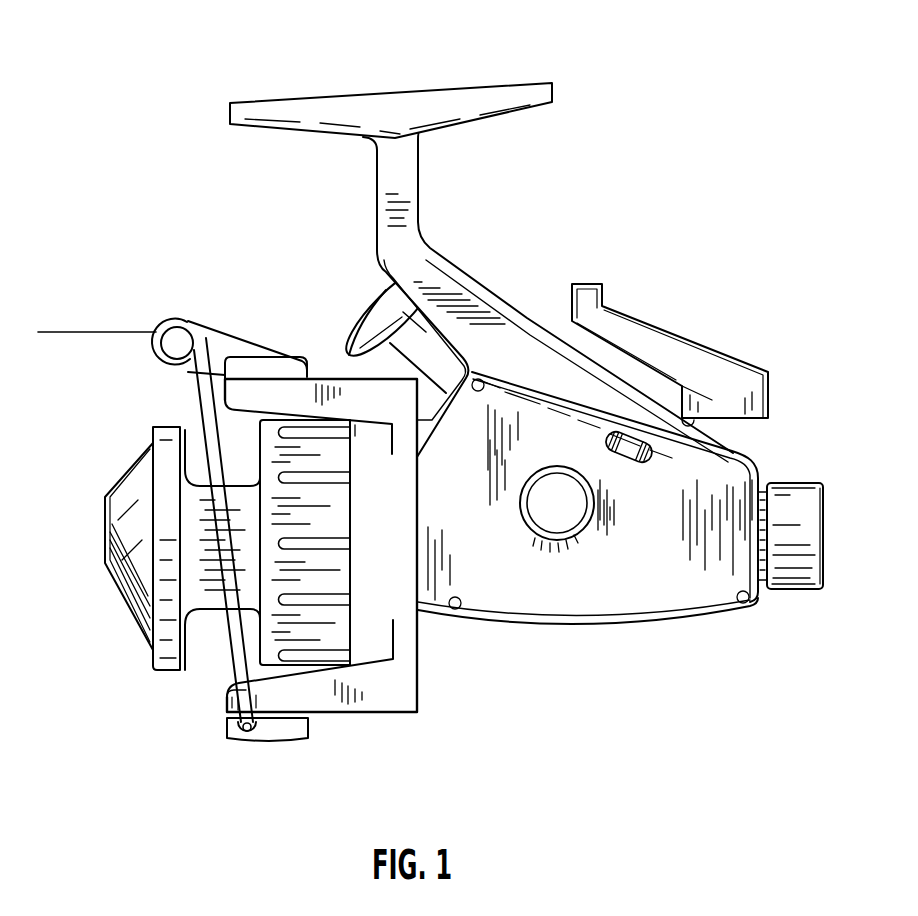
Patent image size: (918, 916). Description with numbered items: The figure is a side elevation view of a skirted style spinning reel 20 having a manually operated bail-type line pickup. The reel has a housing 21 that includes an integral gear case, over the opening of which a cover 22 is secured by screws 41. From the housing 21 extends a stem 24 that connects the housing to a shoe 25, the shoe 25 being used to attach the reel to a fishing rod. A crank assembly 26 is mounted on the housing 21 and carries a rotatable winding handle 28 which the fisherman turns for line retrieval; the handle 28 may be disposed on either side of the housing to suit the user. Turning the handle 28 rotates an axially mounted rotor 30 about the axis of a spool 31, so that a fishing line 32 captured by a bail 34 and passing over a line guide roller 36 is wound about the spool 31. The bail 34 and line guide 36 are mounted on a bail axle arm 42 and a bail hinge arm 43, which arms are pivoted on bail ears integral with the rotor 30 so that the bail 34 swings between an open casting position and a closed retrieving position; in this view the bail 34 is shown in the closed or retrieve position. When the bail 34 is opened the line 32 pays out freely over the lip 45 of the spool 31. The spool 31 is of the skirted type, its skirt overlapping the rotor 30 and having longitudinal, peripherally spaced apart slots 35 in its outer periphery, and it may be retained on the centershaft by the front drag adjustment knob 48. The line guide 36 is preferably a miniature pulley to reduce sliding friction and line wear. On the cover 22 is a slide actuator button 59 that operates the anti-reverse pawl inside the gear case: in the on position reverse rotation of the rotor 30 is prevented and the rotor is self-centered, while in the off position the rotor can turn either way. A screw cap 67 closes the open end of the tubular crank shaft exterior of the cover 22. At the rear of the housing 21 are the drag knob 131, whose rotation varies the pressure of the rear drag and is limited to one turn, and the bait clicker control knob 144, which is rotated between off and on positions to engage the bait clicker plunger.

The spinning reel 20 is at (505, 287).
The housing 21 is at (543, 622).
The cover 22 is at (613, 597).
The stem 24 is at (410, 212).
The shoe 25 is at (402, 100).
The crank assembly 26 is at (372, 291).
The winding handle 28 is at (357, 323).
The rotor 30 is at (388, 698).
The spool 31 is at (178, 668).
The fishing line 32 is at (73, 332).
The bail 34 is at (233, 663).
The slots 35 is at (338, 478).
The line guide roller 36 is at (187, 325).
The screws 41 is at (457, 608).
The bail axle arm 42 is at (267, 368).
The bail hinge arm 43 is at (290, 728).
The lip 45 is at (190, 440).
The drag adjustment knob 48 is at (115, 590).
The slide actuator button 59 is at (628, 450).
The screw cap 67 is at (581, 537).
The drag knob 131 is at (811, 537).
The bait clicker control knob 144 is at (698, 350).